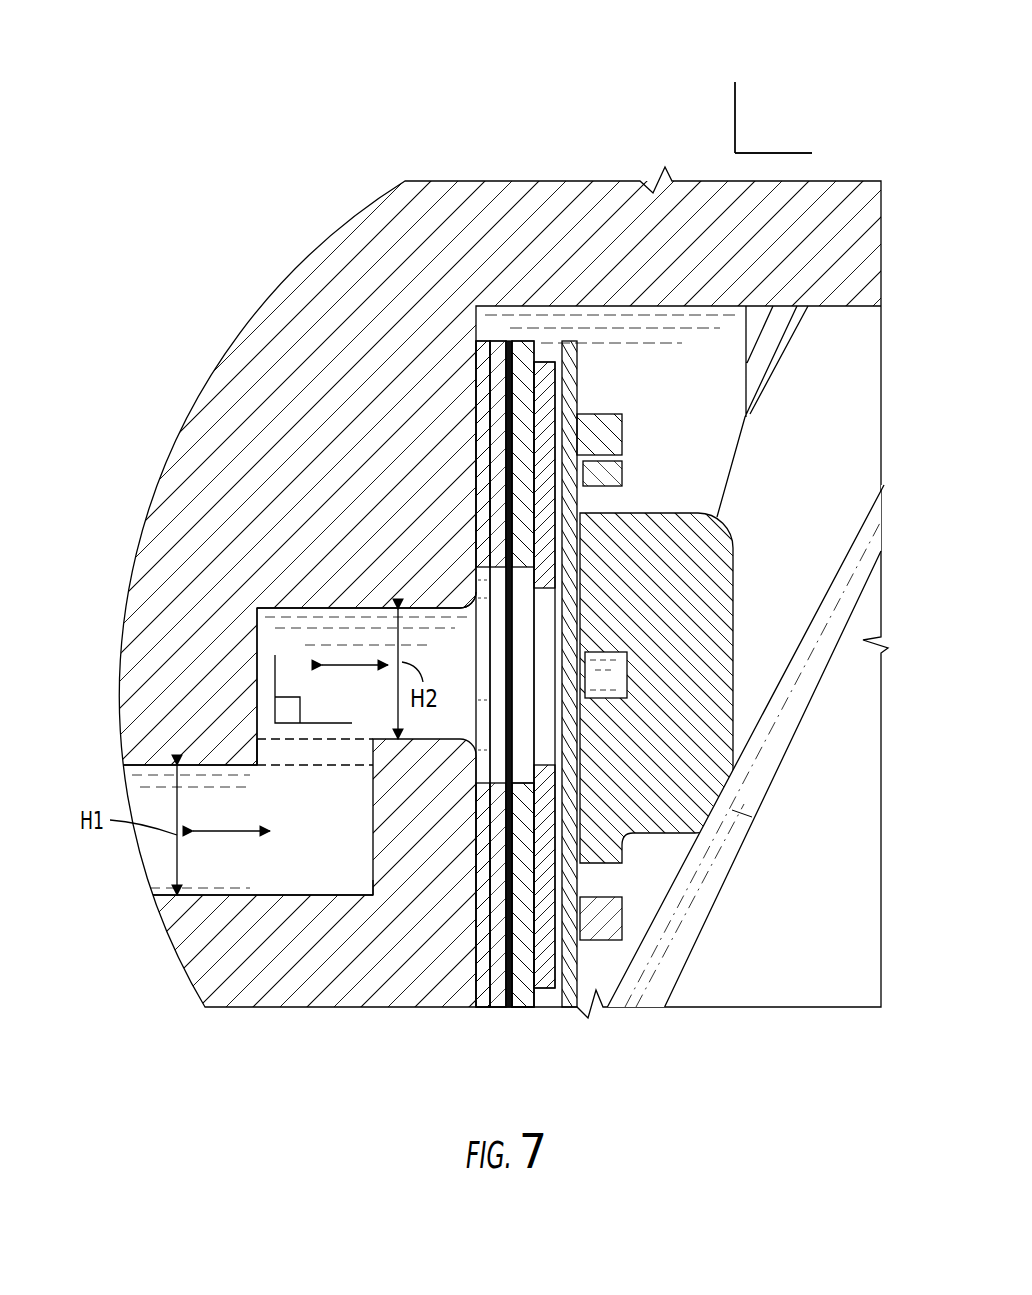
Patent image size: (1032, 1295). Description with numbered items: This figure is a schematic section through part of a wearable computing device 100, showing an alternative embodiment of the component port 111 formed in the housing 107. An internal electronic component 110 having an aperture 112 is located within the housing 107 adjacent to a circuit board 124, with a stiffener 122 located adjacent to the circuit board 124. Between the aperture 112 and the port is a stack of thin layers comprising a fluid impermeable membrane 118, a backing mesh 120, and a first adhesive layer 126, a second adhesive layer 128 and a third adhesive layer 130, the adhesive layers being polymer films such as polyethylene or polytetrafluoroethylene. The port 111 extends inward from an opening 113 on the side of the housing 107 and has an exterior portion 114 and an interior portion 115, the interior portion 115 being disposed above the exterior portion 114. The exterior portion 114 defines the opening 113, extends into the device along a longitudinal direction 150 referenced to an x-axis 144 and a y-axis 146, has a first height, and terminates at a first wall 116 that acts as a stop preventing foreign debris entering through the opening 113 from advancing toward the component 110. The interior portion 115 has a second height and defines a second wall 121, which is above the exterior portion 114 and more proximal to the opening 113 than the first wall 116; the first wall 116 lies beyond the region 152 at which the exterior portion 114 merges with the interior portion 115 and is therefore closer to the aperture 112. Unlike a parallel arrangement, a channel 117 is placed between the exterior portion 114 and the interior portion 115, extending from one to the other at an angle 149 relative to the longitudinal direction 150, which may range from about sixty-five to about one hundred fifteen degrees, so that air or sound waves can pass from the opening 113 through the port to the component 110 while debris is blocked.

The wearable computing device 100 is at (176, 99).
The housing 107 is at (133, 419).
The internal electronic component 110 is at (713, 797).
The component port 111 is at (110, 856).
The aperture 112 is at (618, 672).
The opening 113 is at (125, 792).
The exterior portion 114 is at (248, 870).
The interior portion 115 is at (442, 623).
The first wall 116 is at (370, 872).
The channel 117 is at (323, 753).
The fluid impermeable membrane 118 is at (490, 473).
The backing mesh 120 is at (507, 372).
The second wall 121 is at (257, 630).
The stiffener 122 is at (543, 400).
The circuit board 124 is at (568, 535).
The first adhesive layer 126 is at (475, 873).
The second adhesive layer 128 is at (490, 985).
The third adhesive layer 130 is at (523, 990).
The x-axis 144 is at (835, 152).
The y-axis 146 is at (745, 62).
The angle 149 is at (314, 683).
The longitudinal direction 150 is at (360, 665).
The region 152 is at (257, 760).